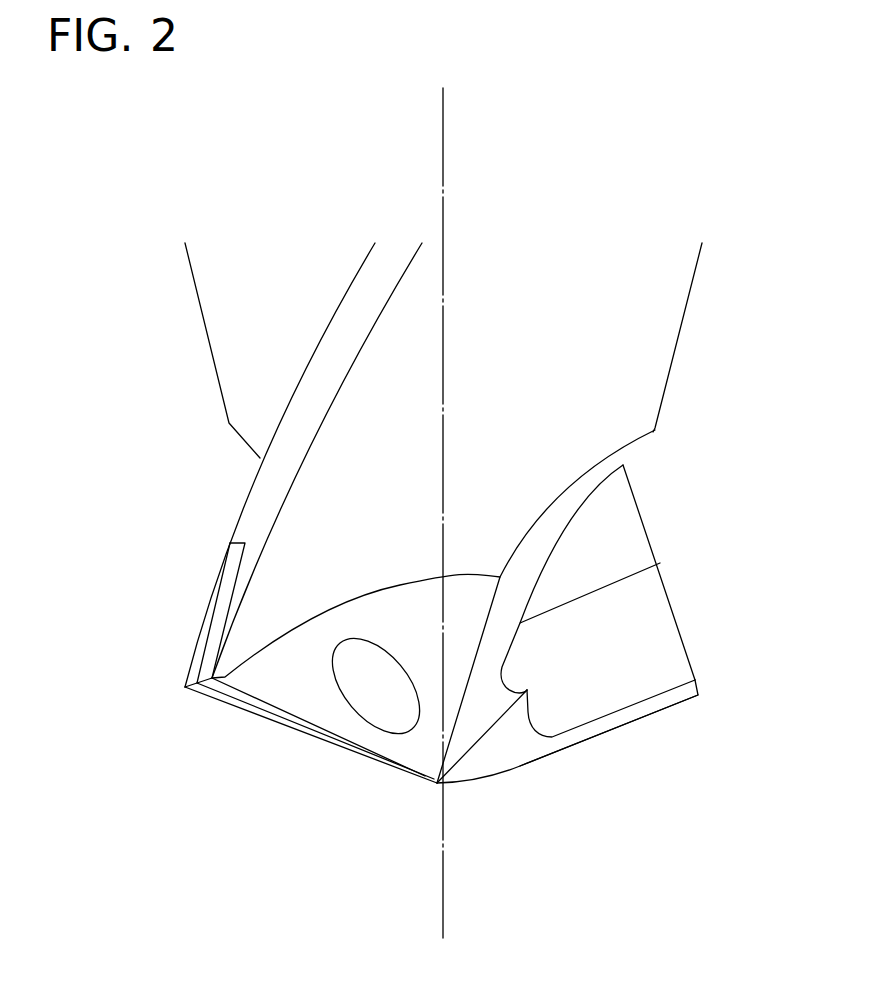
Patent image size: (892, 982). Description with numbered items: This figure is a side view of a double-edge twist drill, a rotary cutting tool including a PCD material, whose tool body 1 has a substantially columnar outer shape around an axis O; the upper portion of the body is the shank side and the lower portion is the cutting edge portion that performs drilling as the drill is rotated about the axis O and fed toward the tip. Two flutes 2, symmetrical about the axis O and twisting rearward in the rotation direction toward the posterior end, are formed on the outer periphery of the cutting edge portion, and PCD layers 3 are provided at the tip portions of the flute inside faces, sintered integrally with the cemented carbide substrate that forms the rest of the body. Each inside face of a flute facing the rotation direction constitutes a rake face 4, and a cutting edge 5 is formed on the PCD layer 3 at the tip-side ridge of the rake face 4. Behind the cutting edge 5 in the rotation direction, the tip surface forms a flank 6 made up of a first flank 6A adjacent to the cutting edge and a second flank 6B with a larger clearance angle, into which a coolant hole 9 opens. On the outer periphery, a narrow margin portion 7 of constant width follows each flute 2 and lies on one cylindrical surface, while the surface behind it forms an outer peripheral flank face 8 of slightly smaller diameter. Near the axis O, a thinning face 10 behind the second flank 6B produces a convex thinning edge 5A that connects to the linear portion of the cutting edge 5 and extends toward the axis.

The axis O is at (445, 122).
The tool body 1 is at (129, 248).
The flute 2 is at (216, 462).
The PCD layer 3 is at (250, 714).
The rake face 4 is at (603, 634).
The cutting edge 5 is at (277, 733).
The thinning edge 5A is at (483, 780).
The flank 6 is at (315, 784).
The first flank 6A is at (308, 729).
The second flank 6B is at (358, 732).
The margin portion 7 is at (250, 520).
The outer peripheral flank face 8 is at (558, 352).
The coolant hole 9 is at (390, 707).
The thinning face 10 is at (528, 563).